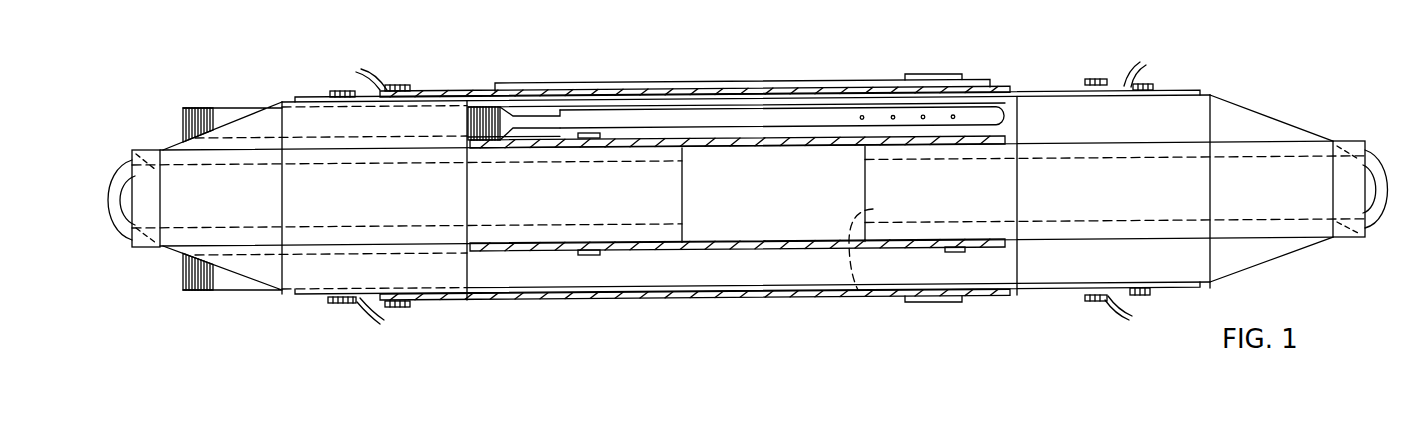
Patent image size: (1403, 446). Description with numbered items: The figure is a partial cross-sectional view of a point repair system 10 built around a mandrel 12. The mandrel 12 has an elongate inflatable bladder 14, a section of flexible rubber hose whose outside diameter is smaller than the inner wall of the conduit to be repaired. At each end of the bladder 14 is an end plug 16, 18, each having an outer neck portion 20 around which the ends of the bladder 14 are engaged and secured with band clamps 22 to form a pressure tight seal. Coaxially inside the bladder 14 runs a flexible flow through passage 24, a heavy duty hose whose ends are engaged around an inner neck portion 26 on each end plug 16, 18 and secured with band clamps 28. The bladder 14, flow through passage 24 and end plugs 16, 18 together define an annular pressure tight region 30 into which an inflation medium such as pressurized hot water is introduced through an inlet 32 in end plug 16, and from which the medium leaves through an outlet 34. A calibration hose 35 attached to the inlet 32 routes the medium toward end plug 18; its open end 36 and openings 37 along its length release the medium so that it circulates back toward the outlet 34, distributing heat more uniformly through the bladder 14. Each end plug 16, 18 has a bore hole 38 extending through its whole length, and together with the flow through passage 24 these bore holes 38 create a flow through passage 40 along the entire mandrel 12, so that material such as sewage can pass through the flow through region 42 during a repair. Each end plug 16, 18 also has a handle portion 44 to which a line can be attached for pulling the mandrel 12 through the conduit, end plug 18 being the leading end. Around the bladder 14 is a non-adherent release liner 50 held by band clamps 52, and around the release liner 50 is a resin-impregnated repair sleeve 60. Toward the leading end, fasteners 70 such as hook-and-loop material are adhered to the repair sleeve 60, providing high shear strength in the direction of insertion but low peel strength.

The point repair system 10 is at (622, 44).
The mandrel 12 is at (258, 68).
The inflatable bladder 14 is at (310, 95).
The end plug 16 is at (172, 148).
The end plug 18 is at (1244, 106).
The outer neck portion 20 is at (352, 290).
The band clamps 22 is at (345, 90).
The flexible flow through passage 24 is at (700, 250).
The inner neck portion 26 is at (517, 244).
The band clamps 28 is at (590, 256).
The annular pressure tight region 30 is at (805, 262).
The inlet 32 is at (202, 108).
The outlet 34 is at (205, 290).
The calibration hose 35 is at (775, 112).
The end of calibration hose 36 is at (1000, 105).
The openings 37 is at (850, 127).
The bore holes 38 is at (856, 292).
The flow through passage 40 is at (120, 210).
The flow through region 42 is at (750, 165).
The handle portion 44 is at (113, 184).
The release liner 50 is at (440, 91).
The band clamps 52 is at (1100, 79).
The resin-impregnated repair sleeve 60 is at (545, 82).
The fasteners 70 is at (925, 74).